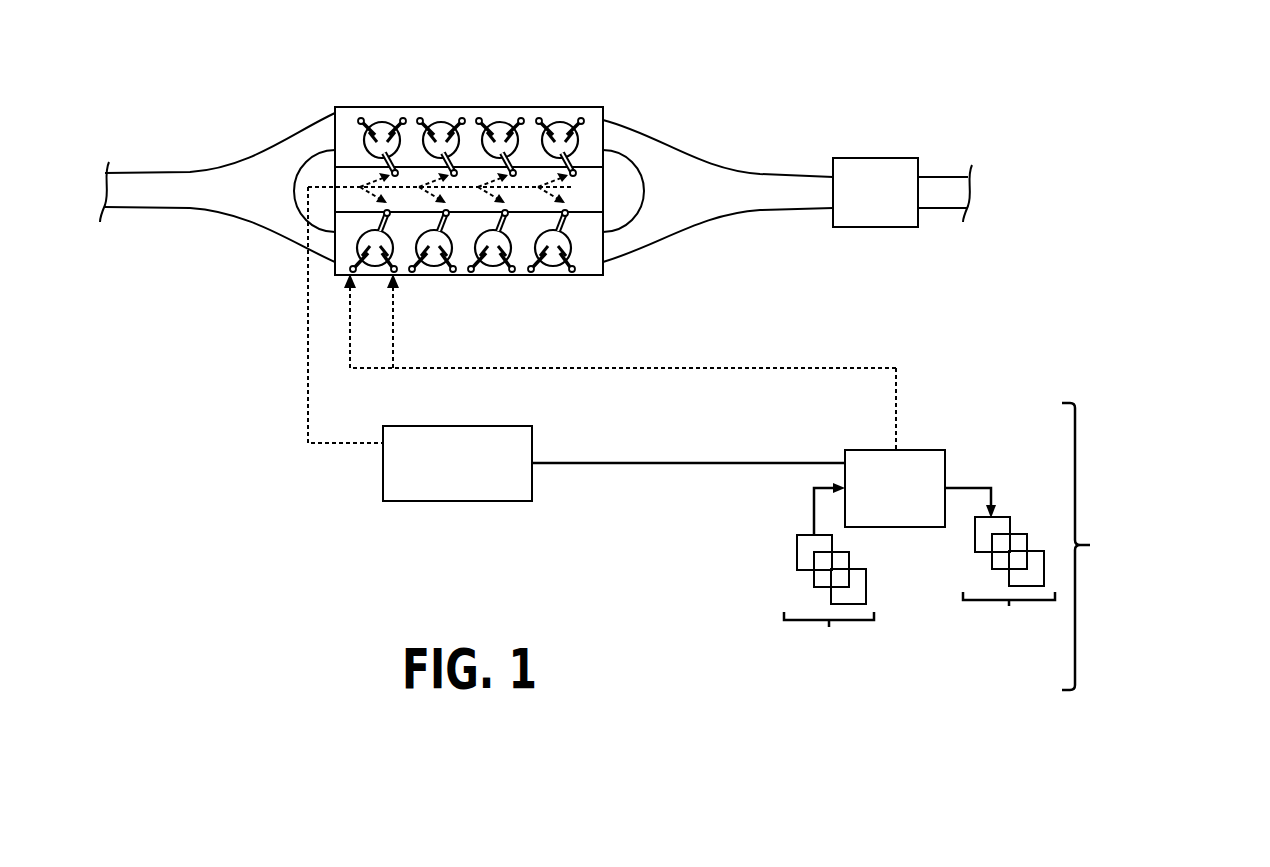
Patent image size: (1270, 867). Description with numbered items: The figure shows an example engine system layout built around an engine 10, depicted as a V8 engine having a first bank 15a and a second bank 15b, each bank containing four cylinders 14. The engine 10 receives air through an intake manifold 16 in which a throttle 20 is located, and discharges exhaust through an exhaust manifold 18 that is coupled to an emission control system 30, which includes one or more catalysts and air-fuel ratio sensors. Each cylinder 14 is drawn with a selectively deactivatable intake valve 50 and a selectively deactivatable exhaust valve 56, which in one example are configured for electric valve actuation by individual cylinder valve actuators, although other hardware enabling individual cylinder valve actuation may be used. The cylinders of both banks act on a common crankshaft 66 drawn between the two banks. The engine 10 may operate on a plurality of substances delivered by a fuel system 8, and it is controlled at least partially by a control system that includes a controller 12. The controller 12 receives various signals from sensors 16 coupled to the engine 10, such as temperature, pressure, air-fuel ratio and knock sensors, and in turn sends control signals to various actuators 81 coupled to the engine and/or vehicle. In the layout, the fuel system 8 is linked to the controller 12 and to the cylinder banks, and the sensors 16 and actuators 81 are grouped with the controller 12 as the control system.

The engine 10 is at (605, 82).
The cylinders 14 is at (583, 146).
The crankshaft 66 is at (390, 158).
The first bank 15a is at (387, 107).
The second bank 15b is at (403, 278).
The intake manifold 16 is at (208, 168).
The throttle 20 is at (185, 183).
The exhaust manifold 18 is at (670, 164).
The emission control system 30 is at (877, 156).
The intake valves 50 is at (537, 273).
The exhaust valves 56 is at (557, 273).
The fuel system 8 is at (528, 474).
The controller 12 is at (738, 447).
The actuators 81 is at (1001, 571).